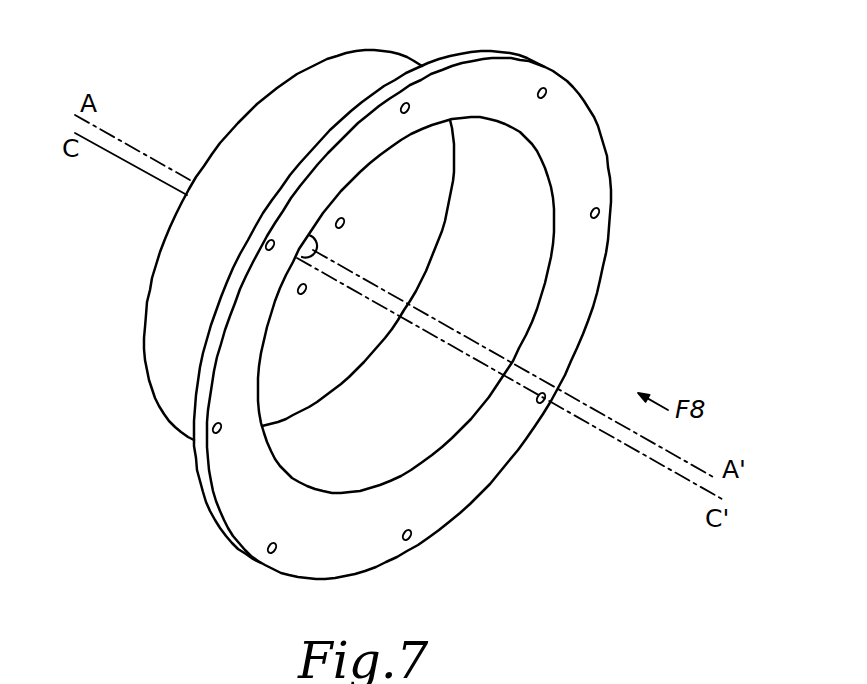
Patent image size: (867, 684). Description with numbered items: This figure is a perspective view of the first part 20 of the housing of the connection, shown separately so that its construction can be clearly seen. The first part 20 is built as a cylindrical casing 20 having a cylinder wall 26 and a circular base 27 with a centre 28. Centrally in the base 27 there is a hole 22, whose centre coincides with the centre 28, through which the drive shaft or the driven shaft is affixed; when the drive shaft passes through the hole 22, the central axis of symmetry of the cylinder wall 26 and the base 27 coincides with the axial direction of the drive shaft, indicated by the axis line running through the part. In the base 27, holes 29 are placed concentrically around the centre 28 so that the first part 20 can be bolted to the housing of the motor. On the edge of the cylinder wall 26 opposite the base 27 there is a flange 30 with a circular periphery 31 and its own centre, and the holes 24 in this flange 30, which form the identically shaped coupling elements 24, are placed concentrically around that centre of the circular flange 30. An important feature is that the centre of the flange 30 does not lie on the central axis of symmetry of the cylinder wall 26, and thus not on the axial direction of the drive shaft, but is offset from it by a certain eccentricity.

The first part of the housing 20 is at (139, 92).
The hole 22 is at (316, 252).
The holes 24 is at (407, 104).
The cylinder wall 26 is at (298, 103).
The circular base 27 is at (400, 182).
The centre 28 is at (265, 244).
The holes 29 is at (336, 218).
The flange 30 is at (495, 447).
The circular periphery 31 is at (611, 262).